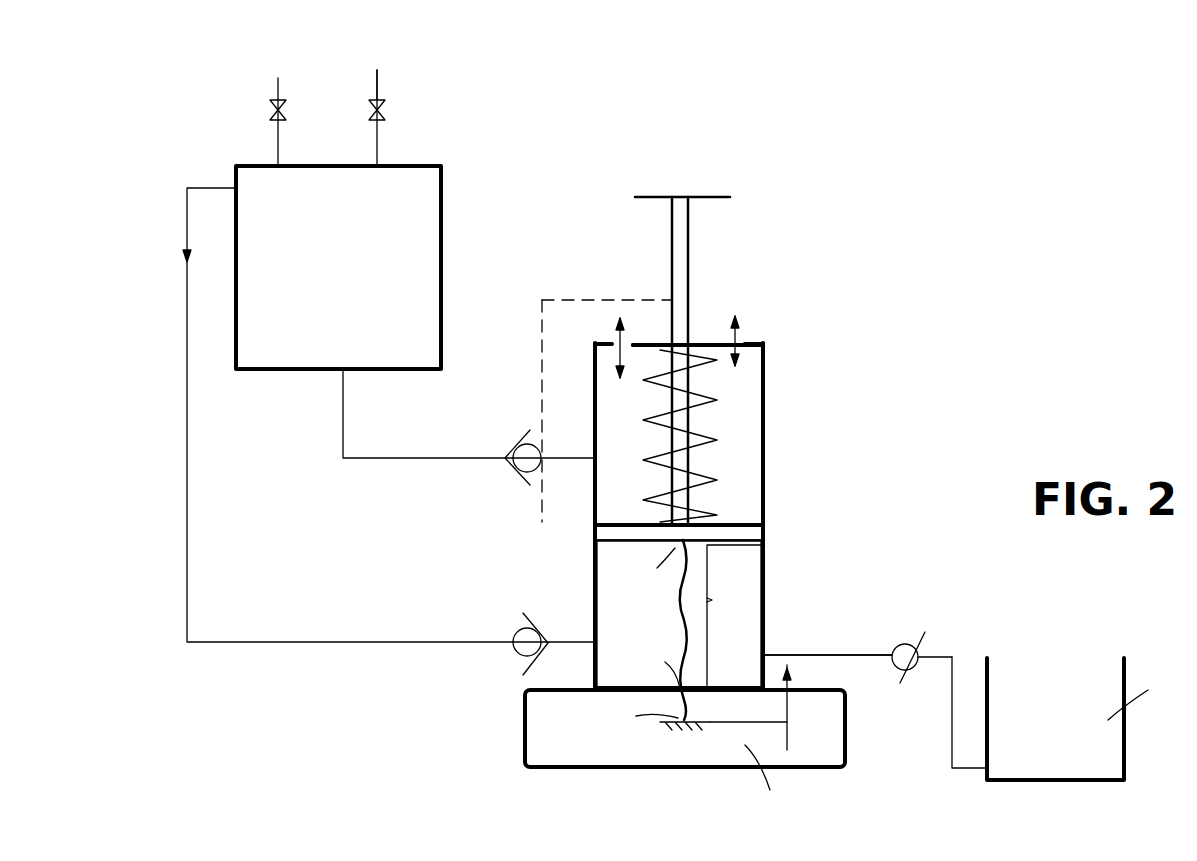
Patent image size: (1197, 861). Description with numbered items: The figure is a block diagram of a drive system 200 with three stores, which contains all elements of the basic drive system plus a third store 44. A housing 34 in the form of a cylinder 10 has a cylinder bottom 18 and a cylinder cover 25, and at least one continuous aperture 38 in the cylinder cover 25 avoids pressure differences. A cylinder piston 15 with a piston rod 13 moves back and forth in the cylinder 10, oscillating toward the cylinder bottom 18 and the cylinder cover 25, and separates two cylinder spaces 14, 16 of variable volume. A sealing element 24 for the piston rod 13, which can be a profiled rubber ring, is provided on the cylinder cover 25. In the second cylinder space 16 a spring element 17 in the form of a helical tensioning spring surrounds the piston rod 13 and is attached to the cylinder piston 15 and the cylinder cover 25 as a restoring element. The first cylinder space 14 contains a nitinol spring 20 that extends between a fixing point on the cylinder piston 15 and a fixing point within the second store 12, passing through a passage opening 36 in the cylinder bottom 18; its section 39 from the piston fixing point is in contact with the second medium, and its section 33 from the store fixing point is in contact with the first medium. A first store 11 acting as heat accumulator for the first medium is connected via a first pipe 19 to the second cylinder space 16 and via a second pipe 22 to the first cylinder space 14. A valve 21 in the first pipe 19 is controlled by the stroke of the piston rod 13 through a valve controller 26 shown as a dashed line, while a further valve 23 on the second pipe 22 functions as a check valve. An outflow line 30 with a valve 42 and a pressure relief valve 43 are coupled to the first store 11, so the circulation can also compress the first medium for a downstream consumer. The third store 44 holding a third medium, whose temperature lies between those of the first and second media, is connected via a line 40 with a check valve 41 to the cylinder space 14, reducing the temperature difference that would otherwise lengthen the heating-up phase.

The drive system 200 is at (944, 226).
The first store 11 is at (389, 266).
The pressure relief valve 43 is at (268, 110).
The valve 42 is at (368, 110).
The line 30 is at (377, 72).
The second pipe 22 is at (365, 642).
The valve 23 is at (515, 640).
The first pipe 19 is at (410, 460).
The valve 21 is at (518, 470).
The valve controller 26 is at (540, 350).
The piston rod 13 is at (692, 238).
The cylinder 10 is at (595, 572).
The sealing element 24 is at (705, 340).
The aperture 38 is at (633, 340).
The cylinder cover 25 is at (745, 336).
The second cylinder space 16 is at (742, 410).
The spring element 17 is at (748, 368).
The cylinder piston 15 is at (748, 502).
The housing 34 is at (817, 456).
The first cylinder space 14 is at (745, 560).
The section 39 is at (734, 615).
The nitinol spring 20 is at (682, 620).
The passage opening 36 is at (680, 686).
The cylinder bottom 18 is at (763, 642).
The line 40 is at (885, 657).
The valve 41 is at (920, 648).
The third store 44 is at (1104, 701).
The second store 12 is at (597, 758).
The section 33 is at (769, 707).